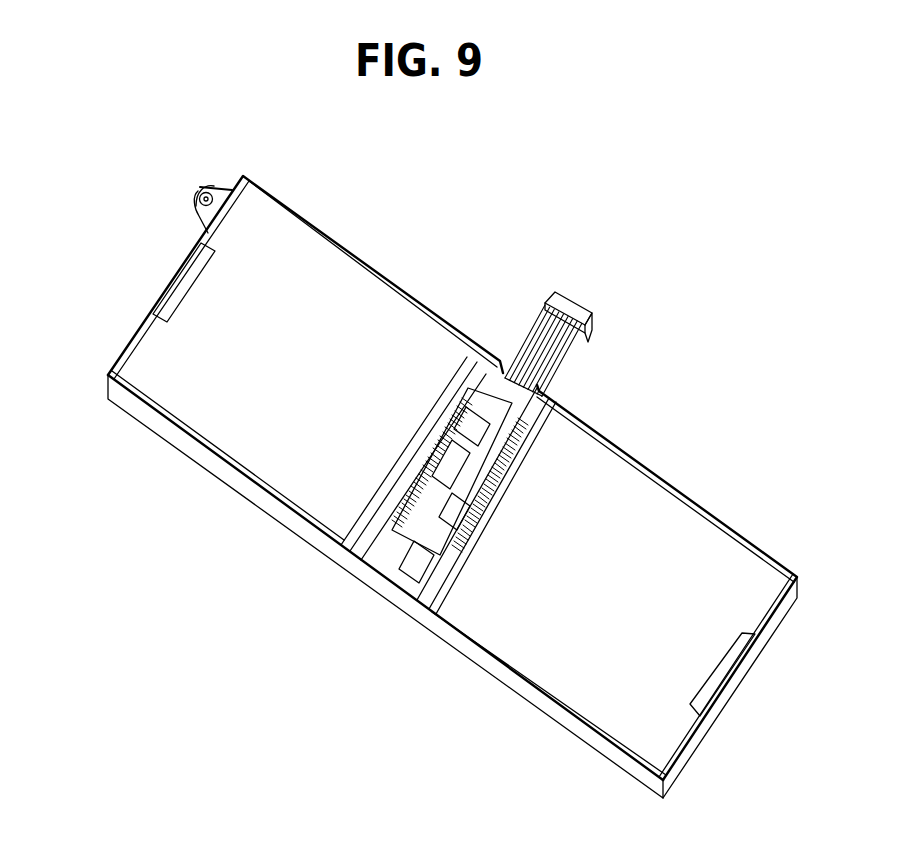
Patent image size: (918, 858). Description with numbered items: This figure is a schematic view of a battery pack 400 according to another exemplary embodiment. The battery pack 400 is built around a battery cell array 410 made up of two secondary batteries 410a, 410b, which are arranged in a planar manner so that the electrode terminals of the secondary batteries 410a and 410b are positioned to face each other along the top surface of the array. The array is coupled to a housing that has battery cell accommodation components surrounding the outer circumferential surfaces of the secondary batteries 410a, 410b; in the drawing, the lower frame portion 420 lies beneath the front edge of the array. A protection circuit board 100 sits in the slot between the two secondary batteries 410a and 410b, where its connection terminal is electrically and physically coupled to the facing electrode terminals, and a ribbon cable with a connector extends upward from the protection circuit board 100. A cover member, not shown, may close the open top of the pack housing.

The battery pack 400 is at (434, 484).
The battery cell array 410 is at (452, 478).
The secondary battery 410a is at (318, 493).
The secondary battery 410b is at (470, 618).
The lower housing frame 420 is at (208, 463).
The protection circuit board 100 is at (505, 418).